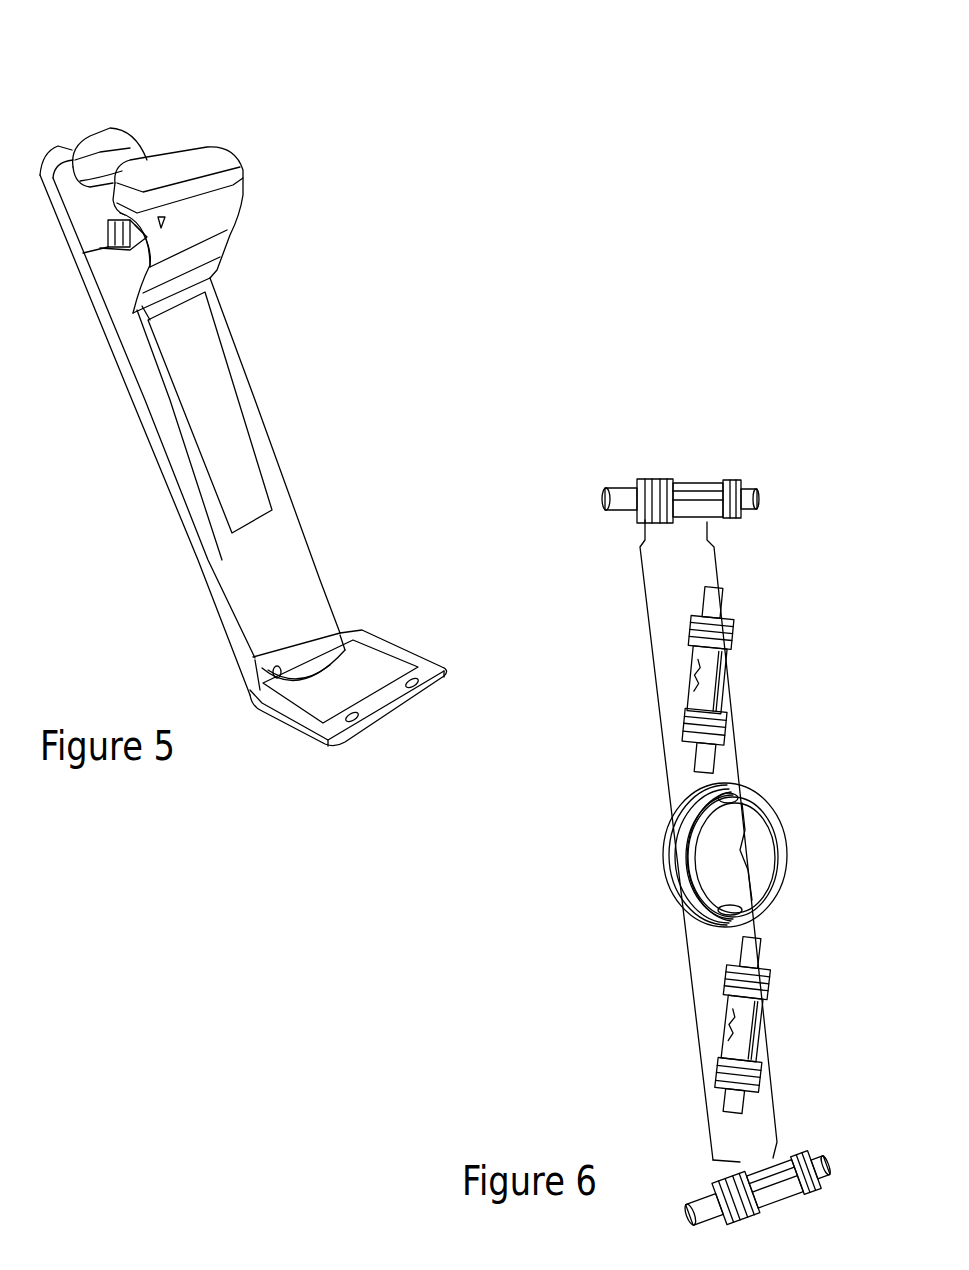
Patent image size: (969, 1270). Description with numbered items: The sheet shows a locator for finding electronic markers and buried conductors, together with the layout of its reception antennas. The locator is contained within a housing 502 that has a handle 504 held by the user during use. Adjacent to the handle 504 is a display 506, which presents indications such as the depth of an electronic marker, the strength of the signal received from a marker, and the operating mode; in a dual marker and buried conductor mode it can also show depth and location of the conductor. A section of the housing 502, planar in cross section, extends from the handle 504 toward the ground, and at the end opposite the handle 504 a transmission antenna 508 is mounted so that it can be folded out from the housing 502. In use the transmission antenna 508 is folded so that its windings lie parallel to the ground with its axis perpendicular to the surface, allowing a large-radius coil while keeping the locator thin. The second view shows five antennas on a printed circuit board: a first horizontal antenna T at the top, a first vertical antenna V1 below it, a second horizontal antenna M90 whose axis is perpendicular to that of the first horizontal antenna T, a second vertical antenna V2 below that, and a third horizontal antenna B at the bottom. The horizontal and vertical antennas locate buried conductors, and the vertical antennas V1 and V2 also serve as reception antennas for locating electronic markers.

In FIG. 5, the housing 502 is at (295, 550).
In FIG. 5, the handle 504 is at (98, 153).
In FIG. 5, the display 506 is at (183, 152).
In FIG. 5, the transmission antenna 508 is at (397, 648).
In FIG. 6, the first horizontal antenna T is at (748, 494).
In FIG. 6, the third horizontal antenna B is at (826, 1168).
In FIG. 6, the second horizontal antenna M90 is at (776, 856).
In FIG. 6, the first vertical antenna V1 is at (720, 687).
In FIG. 6, the second vertical antenna V2 is at (758, 1026).